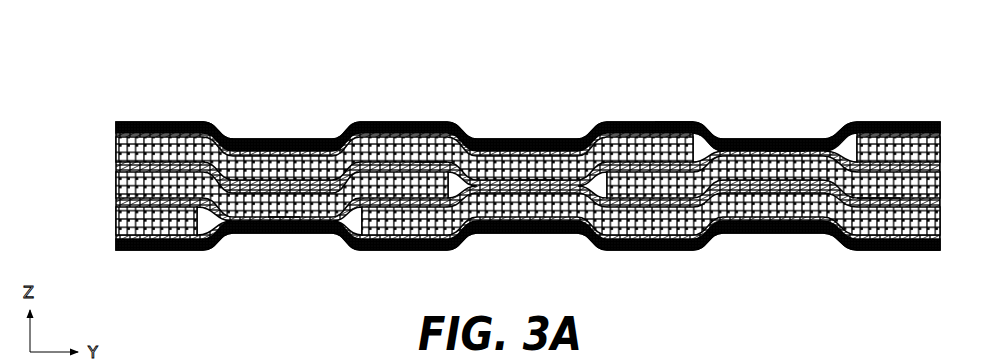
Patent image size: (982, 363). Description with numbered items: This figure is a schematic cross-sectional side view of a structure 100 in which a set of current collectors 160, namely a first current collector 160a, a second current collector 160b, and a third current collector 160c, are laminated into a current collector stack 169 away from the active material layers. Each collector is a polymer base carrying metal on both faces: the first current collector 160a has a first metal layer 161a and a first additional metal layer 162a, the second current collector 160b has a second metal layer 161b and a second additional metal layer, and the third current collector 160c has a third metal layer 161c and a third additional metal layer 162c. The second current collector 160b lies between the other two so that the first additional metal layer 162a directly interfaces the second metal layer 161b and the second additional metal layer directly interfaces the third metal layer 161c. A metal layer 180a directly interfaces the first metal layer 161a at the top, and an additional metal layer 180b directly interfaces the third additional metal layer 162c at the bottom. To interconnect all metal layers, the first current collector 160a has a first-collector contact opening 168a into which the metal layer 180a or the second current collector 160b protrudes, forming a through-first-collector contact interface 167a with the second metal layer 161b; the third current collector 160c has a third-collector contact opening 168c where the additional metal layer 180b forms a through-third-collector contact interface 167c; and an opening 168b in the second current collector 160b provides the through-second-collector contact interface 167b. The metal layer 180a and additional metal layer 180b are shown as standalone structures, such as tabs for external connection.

The display device 100 is at (148, 75).
The multilayer stack 160 is at (68, 128).
The first current collector 160a is at (365, 135).
The second current collector 160b is at (112, 163).
The third current collector 160c is at (112, 200).
The first metal layer 161a is at (678, 123).
The second metal layer 161b is at (433, 161).
The third metal layer 161c is at (867, 203).
The first additional metal layer 162a is at (637, 160).
The third additional metal layer 162c is at (923, 243).
The through-first-collector contact interface 167a is at (283, 216).
The through-second-collector contact interface 167b is at (533, 179).
The through-third-collector contact interface 167c is at (783, 146).
The first-collector contact opening 168a is at (703, 147).
The second gap region 168b is at (458, 190).
The third-collector contact opening 168c is at (208, 218).
The current collector stack 169 is at (202, 97).
The metal layer 180a is at (128, 122).
The additional metal layer 180b is at (133, 250).